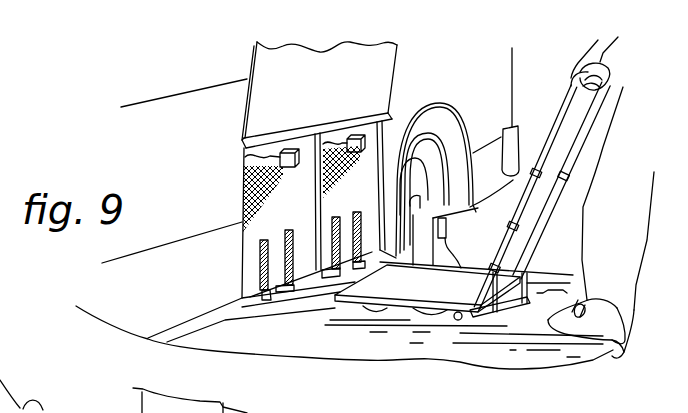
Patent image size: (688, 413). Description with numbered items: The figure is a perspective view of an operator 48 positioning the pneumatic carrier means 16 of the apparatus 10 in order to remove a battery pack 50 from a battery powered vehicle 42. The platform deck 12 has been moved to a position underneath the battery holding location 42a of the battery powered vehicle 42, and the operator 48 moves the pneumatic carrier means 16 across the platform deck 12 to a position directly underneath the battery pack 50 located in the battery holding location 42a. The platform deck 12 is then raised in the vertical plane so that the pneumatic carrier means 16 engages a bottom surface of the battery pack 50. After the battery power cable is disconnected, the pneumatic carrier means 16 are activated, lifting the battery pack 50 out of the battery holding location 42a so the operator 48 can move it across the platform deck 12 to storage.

The apparatus 10 is at (486, 381).
The platform deck 12 is at (353, 337).
The pneumatic carrier means 16 is at (432, 292).
The battery powered vehicle 42 is at (478, 83).
The battery holding location 42a is at (340, 270).
The operator 48 is at (622, 350).
The battery pack 50 is at (243, 190).